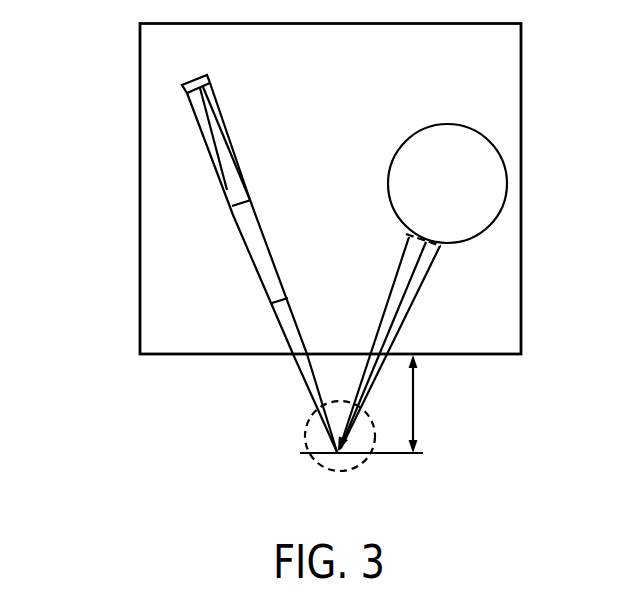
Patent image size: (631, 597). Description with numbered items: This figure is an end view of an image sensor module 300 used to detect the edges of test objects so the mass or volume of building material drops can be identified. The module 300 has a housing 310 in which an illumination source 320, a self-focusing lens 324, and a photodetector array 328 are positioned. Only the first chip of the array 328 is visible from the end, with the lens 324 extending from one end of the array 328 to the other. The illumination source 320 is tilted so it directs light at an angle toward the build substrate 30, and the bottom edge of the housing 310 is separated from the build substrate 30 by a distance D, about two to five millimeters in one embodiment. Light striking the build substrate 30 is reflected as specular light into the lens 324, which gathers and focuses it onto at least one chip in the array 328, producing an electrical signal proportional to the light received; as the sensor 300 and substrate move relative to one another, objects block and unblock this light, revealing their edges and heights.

The image sensor module 300 is at (108, 221).
The housing 310 is at (522, 237).
The illumination source 320 is at (449, 124).
The self-focusing lens 324 is at (248, 222).
The photodetector array 328 is at (209, 81).
The build substrate 30 is at (406, 456).
The distance D is at (413, 405).